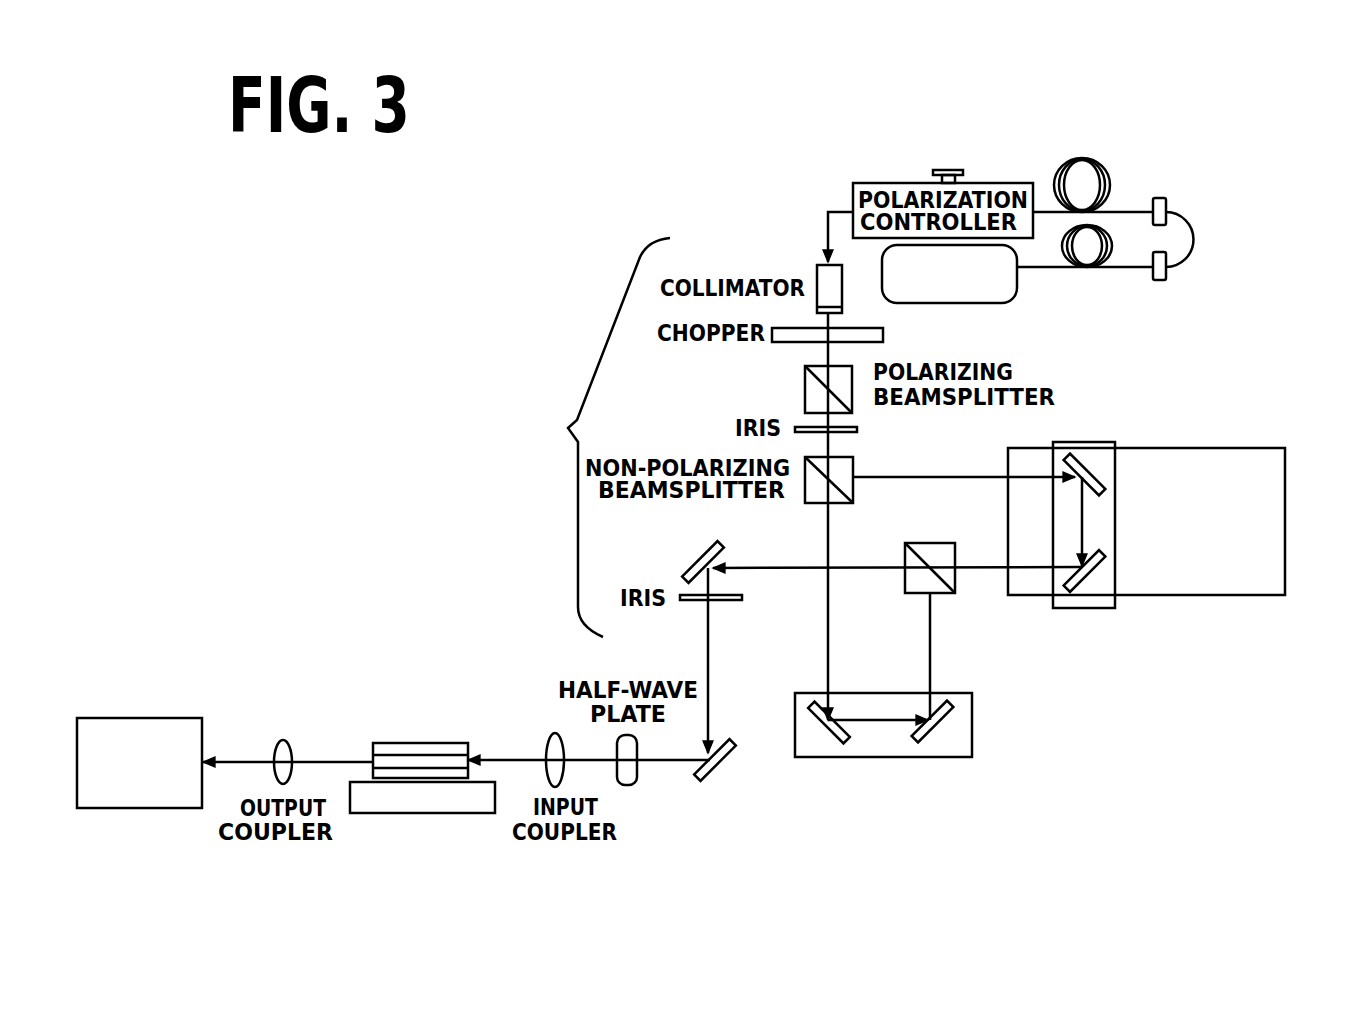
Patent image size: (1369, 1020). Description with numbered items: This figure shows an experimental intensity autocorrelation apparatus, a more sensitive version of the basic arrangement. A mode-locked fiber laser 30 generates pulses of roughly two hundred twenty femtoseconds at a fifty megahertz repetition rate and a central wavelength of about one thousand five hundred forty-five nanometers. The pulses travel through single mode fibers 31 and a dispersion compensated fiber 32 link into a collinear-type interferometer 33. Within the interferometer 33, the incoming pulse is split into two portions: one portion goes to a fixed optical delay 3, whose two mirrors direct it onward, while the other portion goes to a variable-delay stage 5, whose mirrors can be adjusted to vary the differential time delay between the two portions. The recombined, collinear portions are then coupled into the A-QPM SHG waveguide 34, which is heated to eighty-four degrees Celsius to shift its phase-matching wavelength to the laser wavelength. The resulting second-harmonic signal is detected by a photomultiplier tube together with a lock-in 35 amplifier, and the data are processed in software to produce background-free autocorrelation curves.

The fixed optical delay 3 is at (975, 722).
The variable-delay stage 5 is at (1288, 502).
The mode-locked fiber laser 30 is at (949, 290).
The single mode fibers 31 is at (1092, 227).
The dispersion compensated fiber 32 is at (1225, 239).
The collinear-type interferometer 33 is at (597, 437).
The A-QPM SHG waveguide 34 is at (415, 748).
The lock-in amplifier 35 is at (139, 781).